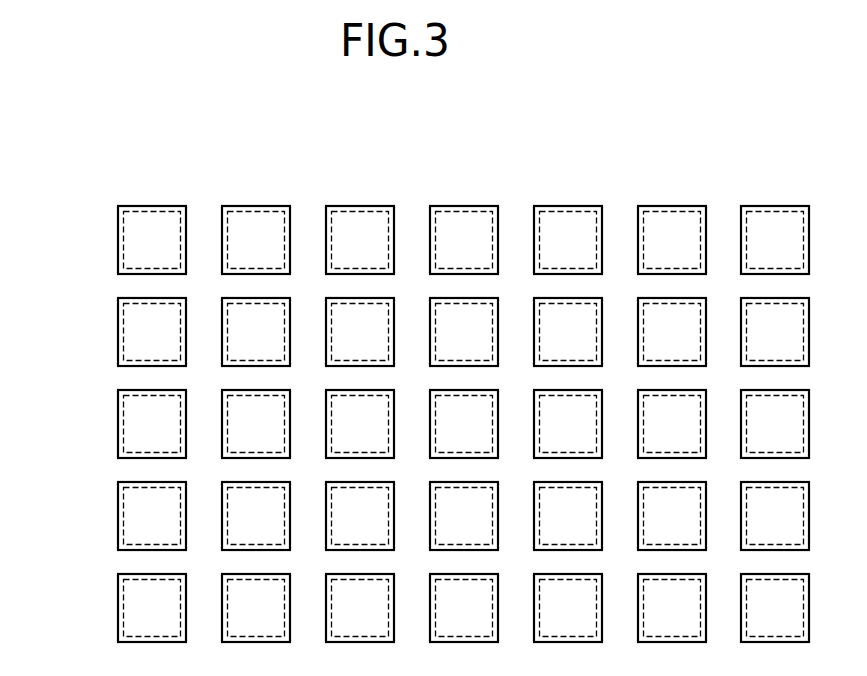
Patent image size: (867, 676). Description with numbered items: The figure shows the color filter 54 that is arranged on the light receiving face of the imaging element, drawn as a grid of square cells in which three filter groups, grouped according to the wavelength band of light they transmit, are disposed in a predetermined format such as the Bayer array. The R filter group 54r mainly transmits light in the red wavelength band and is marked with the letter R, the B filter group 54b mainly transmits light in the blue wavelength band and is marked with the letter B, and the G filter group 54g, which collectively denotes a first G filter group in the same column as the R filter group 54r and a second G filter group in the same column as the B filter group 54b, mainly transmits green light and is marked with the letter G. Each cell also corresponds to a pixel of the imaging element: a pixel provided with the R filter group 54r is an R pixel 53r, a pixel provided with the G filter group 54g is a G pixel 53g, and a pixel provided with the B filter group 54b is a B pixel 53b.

The color filter 54 is at (515, 164).
The G filter group 54g is at (154, 206).
The B filter group 54b is at (258, 206).
The R filter group 54r is at (118, 323).
The G pixel 53g is at (123, 238).
The B pixel 53b is at (277, 212).
The R pixel 53r is at (123, 348).